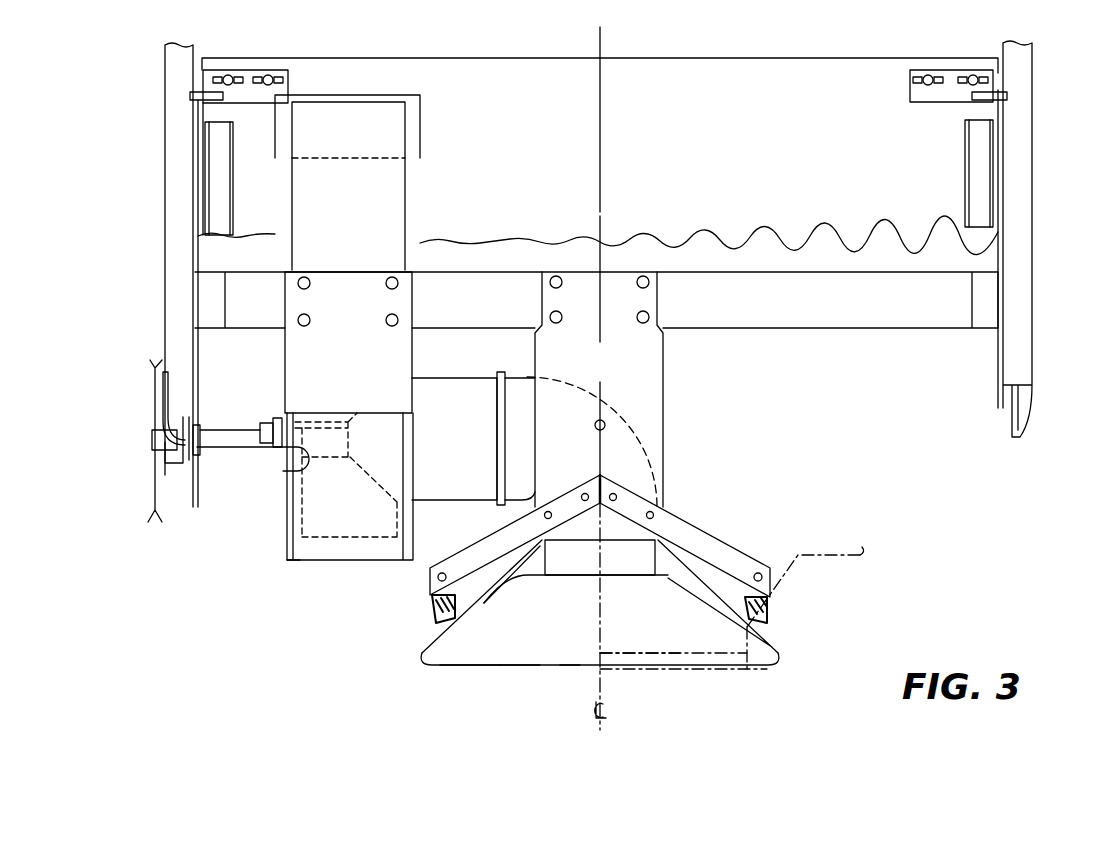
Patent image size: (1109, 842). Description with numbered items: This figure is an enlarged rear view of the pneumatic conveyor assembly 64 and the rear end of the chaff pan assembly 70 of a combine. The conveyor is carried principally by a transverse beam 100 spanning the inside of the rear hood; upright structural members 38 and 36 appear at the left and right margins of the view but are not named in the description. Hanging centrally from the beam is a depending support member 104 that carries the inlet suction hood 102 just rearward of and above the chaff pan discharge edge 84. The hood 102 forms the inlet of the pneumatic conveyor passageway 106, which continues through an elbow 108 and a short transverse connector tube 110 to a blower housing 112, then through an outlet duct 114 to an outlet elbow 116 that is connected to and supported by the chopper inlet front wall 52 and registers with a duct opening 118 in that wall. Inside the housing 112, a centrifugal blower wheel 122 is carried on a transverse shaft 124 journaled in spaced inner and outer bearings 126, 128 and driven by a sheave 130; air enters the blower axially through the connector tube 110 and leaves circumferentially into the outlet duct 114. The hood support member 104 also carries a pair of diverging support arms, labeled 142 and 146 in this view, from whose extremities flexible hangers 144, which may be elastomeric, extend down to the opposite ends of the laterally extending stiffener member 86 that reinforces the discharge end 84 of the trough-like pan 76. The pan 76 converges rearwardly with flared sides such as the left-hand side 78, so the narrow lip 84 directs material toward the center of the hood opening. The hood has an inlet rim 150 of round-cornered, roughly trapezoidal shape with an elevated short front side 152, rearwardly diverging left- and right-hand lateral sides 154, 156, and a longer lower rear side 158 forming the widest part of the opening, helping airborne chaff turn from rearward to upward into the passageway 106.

The left upright post 38 is at (165, 139).
The right upright post 36 is at (1032, 146).
The chopper inlet front wall 52 is at (728, 164).
The outlet elbow 116 is at (413, 112).
The duct opening 118 is at (372, 165).
The outlet duct 114 is at (413, 259).
The transverse beam 100 is at (750, 329).
The short transverse connector tube 110 is at (431, 380).
The elbow 108 is at (562, 380).
The depending support member 104 is at (663, 378).
The sheave 130 is at (155, 391).
The inner bearing 126 is at (276, 418).
The outer bearing 128 is at (200, 430).
The transverse shaft 124 is at (255, 453).
The blower housing 112 is at (303, 562).
The centrifugal blower wheel 122 is at (352, 540).
The right-hand support arm 142 is at (490, 537).
The right arm 146 is at (700, 532).
The flexible hangers 144 is at (432, 606).
The front side of inlet rim 152 is at (606, 575).
The pneumatic conveyor passageway 106 is at (578, 610).
The left-hand lateral side of inlet rim 154 is at (680, 583).
The right-hand lateral side of inlet rim 156 is at (482, 608).
The discharge end 84 is at (638, 653).
The trough-like pan 76 is at (668, 644).
The left-hand flared side 78 is at (743, 628).
The chaff pan assembly 70 is at (805, 571).
The stiffener member 86 is at (705, 672).
The lower rear side of inlet rim 158 is at (570, 668).
The inlet rim 150 is at (471, 683).
The inlet suction hood 102 is at (522, 697).
The pneumatic conveyor assembly 64 is at (303, 666).